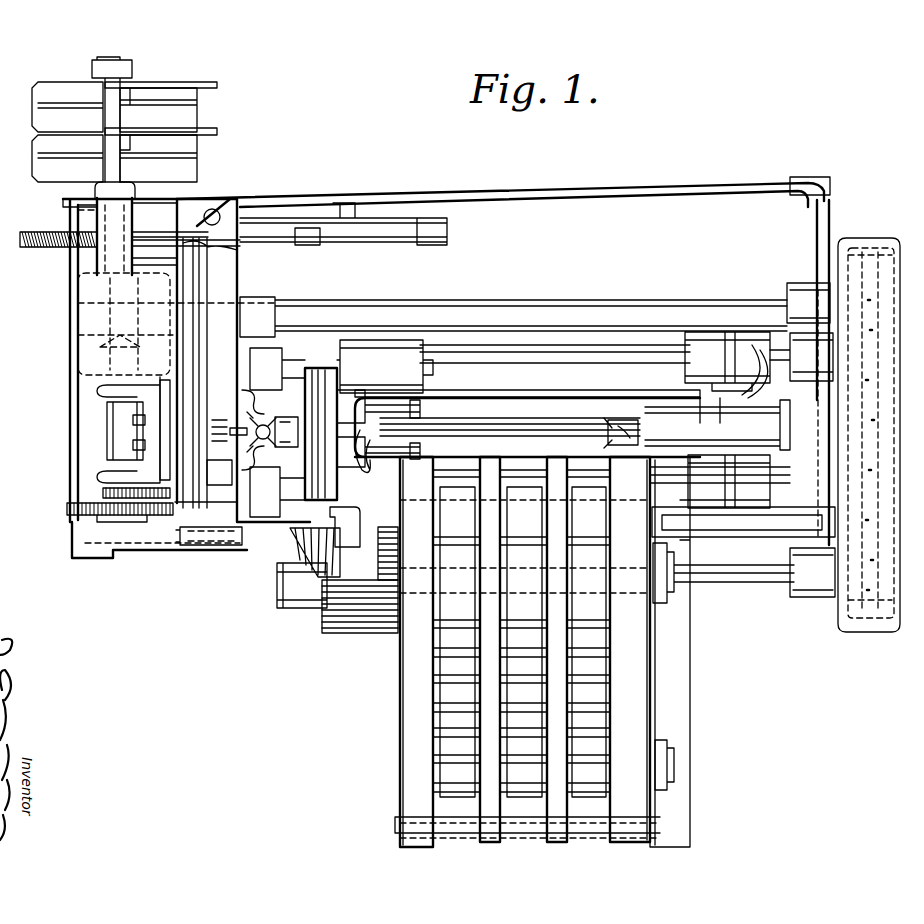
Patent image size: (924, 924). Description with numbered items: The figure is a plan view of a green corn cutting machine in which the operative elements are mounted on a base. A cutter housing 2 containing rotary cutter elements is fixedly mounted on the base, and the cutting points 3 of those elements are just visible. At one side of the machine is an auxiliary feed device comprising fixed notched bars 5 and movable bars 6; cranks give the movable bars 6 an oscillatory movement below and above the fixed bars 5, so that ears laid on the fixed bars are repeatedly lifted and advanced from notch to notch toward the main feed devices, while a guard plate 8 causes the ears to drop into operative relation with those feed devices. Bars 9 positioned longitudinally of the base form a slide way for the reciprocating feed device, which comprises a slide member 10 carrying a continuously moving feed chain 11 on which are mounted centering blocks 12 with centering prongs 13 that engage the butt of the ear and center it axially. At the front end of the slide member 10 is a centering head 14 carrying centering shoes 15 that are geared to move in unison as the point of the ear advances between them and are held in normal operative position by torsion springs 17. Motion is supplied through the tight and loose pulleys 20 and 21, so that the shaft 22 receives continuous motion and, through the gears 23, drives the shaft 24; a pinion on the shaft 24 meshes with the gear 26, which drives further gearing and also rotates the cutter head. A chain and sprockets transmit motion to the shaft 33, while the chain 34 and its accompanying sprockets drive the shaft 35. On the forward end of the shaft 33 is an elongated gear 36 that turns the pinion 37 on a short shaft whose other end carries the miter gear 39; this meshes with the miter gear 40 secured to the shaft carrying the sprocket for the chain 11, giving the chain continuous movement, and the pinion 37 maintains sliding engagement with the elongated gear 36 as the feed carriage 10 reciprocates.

The cutter housing 2 is at (219, 412).
The cutting points 3 is at (219, 469).
The fixed notched bars 5 is at (563, 762).
The movable bars 6 is at (525, 677).
The guard plate 8 is at (625, 395).
The bars 9 is at (540, 355).
The slide member 10 is at (700, 333).
The feed chain 11 is at (680, 418).
The centering blocks 12 is at (628, 410).
The centering prongs 13 is at (605, 412).
The centering head 14 is at (320, 370).
The centering shoes 15 is at (378, 478).
The torsion springs 17 is at (332, 355).
The tight pulley 20 is at (178, 122).
The loose pulley 21 is at (183, 168).
The shaft 22 is at (115, 250).
The gears 23 is at (115, 322).
The shaft 24 is at (498, 310).
The gear 26 is at (190, 268).
The shaft 33 is at (778, 575).
The chain 34 is at (657, 663).
The shaft 35 is at (672, 760).
The elongated gear 36 is at (353, 623).
The pinion 37 is at (378, 537).
The miter gear 39 is at (278, 573).
The miter gear 40 is at (290, 530).